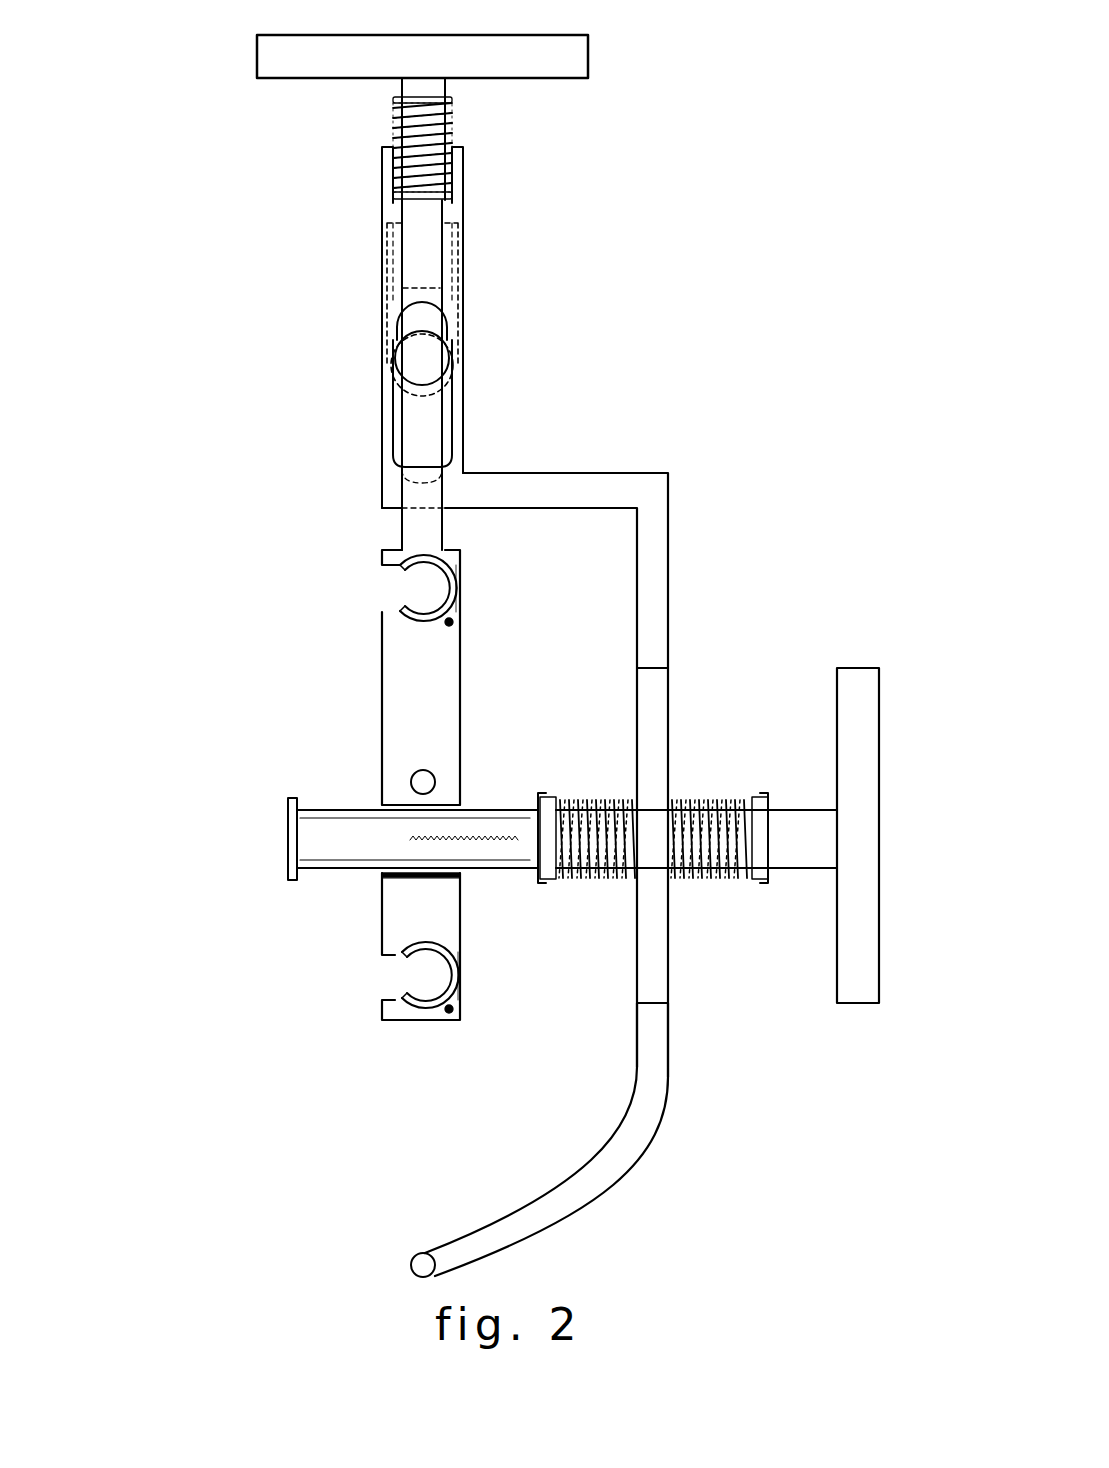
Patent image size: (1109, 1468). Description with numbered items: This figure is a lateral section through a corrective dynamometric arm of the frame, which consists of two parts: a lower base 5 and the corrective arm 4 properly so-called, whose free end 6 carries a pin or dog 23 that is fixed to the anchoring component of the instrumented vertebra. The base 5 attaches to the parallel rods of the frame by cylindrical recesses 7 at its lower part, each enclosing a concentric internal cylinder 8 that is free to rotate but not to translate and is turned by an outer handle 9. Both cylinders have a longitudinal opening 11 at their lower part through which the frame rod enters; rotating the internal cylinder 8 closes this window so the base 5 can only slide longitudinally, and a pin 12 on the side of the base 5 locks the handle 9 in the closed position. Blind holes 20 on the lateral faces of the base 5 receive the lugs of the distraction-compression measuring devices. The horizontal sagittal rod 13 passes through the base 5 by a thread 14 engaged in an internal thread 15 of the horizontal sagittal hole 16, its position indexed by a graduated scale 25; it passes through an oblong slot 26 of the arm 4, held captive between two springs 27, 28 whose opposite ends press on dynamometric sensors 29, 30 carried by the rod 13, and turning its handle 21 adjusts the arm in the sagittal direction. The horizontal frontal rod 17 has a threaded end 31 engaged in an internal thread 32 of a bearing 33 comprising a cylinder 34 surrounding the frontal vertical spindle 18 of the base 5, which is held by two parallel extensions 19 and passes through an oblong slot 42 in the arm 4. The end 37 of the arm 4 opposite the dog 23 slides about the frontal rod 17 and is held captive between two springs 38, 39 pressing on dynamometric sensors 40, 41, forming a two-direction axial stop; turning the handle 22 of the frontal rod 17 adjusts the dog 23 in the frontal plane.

The corrective arm 4 is at (617, 493).
The base 5 is at (413, 672).
The free end 6 is at (508, 1230).
The cylindrical recess 7 is at (397, 558).
The internal cylinder 8 is at (440, 584).
The handle 9 is at (443, 563).
The opening 11 is at (390, 592).
The pin 12 is at (453, 622).
The horizontal sagittal rod 13 is at (800, 833).
The thread 14 is at (300, 885).
The internal thread 15 is at (427, 875).
The horizontal sagittal hole 16 is at (383, 808).
The horizontal frontal rod 17 is at (422, 87).
The frontal vertical spindle 18 is at (423, 360).
The parallel extensions 19 is at (420, 525).
The blind holes 20 is at (418, 778).
The handle 21 is at (858, 737).
The handle 22 is at (340, 62).
The pin 23 is at (420, 1265).
The graduated scale 25 is at (405, 838).
The oblong slot 26 is at (652, 920).
The spring 27 is at (708, 803).
The spring 28 is at (602, 803).
The dynamometric sensor 29 is at (760, 803).
The dynamometric sensor 30 is at (543, 880).
The threaded end 31 is at (390, 268).
The internal thread 32 is at (462, 238).
The bearing 33 is at (463, 288).
The cylinder 34 is at (423, 328).
The end of arm 37 is at (397, 146).
The spring 38 is at (427, 125).
The spring 39 is at (400, 172).
The dynamometric sensor 40 is at (422, 102).
The dynamometric sensor 41 is at (420, 197).
The oblong slot 42 is at (400, 442).